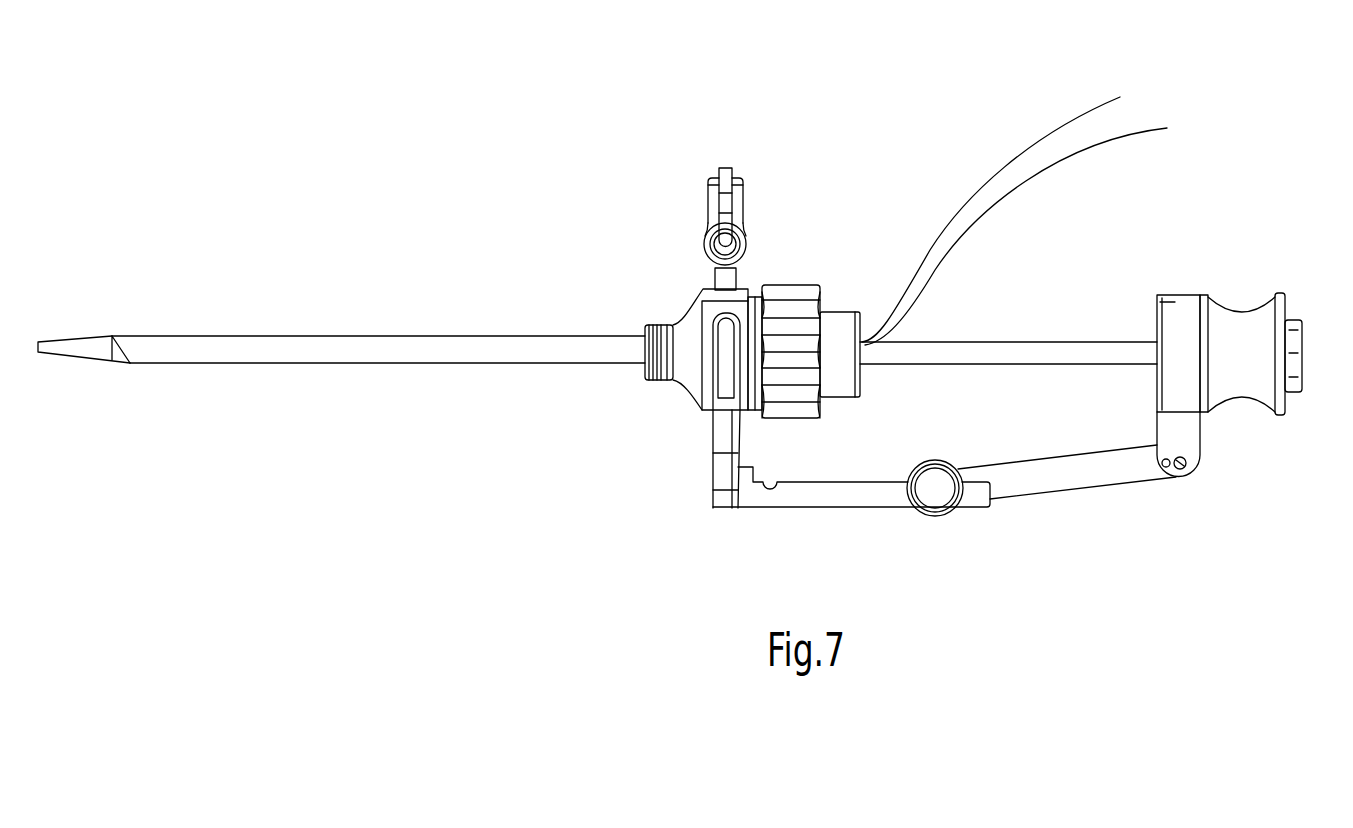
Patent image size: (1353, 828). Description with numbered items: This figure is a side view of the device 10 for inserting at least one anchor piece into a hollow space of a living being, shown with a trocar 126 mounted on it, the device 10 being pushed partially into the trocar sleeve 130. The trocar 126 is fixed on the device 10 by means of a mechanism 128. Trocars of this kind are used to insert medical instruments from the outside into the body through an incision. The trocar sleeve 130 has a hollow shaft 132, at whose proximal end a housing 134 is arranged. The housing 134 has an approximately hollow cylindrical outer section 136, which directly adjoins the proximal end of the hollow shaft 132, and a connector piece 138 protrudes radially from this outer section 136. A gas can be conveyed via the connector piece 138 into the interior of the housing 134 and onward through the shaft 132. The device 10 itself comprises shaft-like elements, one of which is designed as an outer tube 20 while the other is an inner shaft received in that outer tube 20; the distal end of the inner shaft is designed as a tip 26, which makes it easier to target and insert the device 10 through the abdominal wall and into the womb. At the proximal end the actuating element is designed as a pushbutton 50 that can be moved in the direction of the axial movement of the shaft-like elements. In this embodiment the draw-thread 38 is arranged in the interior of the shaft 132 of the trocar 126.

The device 10 is at (1190, 258).
The outer tube 20 is at (1062, 345).
The tip 26 is at (87, 343).
The draw-thread 38 is at (1037, 185).
The pushbutton 50 is at (1302, 338).
The trocar 126 is at (612, 470).
The mechanism 128 is at (1156, 538).
The trocar sleeve 130 is at (366, 256).
The shaft 132 is at (402, 337).
The housing 134 is at (665, 236).
The outer section 136 is at (698, 372).
The connector piece 138 is at (743, 200).